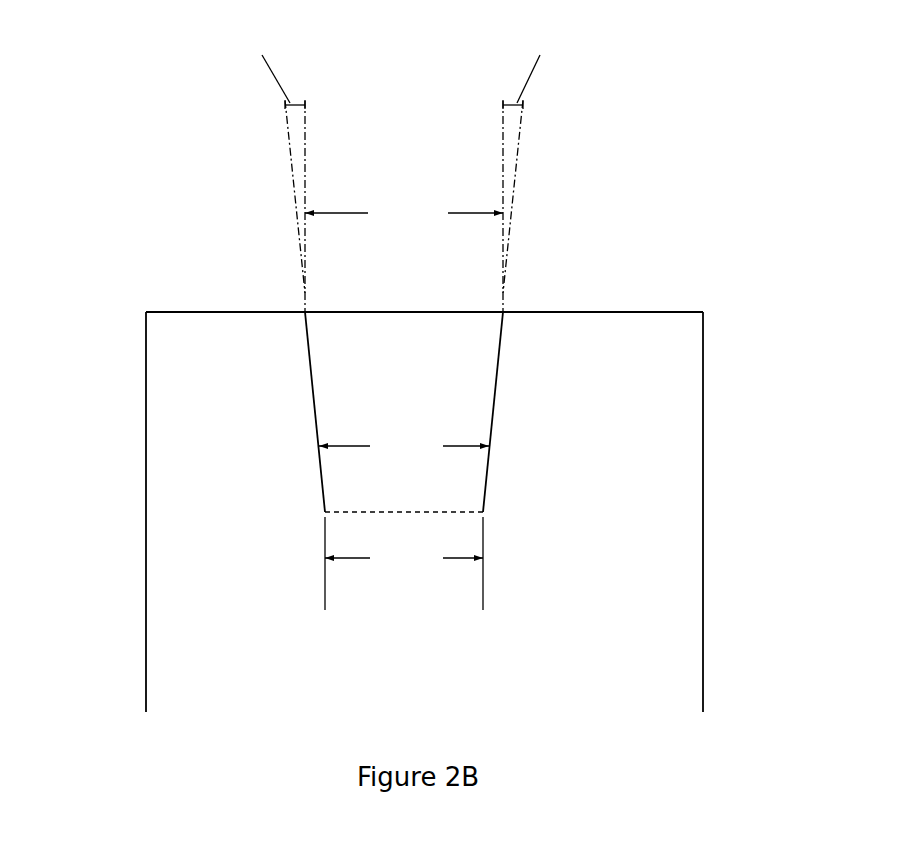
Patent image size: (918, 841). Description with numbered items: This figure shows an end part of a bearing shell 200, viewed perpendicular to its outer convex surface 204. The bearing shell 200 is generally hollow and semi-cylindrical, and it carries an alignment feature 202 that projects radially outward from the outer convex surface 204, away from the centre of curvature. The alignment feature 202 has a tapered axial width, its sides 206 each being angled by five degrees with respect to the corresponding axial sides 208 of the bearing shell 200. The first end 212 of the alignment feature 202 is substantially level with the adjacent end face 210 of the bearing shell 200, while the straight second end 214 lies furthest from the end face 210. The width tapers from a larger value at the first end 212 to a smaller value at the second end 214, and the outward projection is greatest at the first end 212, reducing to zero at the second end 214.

The bearing shell 200 is at (122, 134).
The alignment feature 202 is at (427, 391).
The outer convex surface 204 is at (620, 534).
The sides 206 is at (316, 430).
The axial sides 208 is at (146, 383).
The end face 210 is at (610, 312).
The first end 212 is at (357, 312).
The second end 214 is at (463, 513).